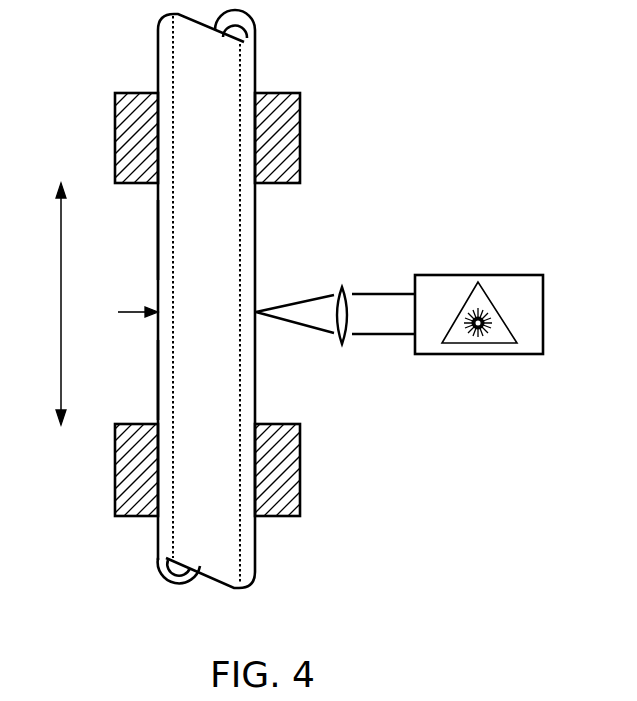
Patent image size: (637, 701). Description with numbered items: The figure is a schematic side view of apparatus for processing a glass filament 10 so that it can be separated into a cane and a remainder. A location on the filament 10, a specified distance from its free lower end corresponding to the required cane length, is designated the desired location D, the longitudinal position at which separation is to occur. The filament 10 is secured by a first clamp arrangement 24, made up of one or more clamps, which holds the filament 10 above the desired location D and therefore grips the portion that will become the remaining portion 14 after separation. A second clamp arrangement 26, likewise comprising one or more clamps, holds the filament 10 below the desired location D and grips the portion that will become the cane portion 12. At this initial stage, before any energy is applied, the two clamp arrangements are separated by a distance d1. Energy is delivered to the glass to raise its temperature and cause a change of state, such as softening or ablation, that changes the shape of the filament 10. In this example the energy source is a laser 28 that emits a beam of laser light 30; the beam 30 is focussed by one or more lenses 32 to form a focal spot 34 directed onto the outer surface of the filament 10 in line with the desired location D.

The filament 10 is at (158, 50).
The cane portion 12 is at (158, 365).
The remaining portion 14 is at (158, 237).
The first clamp arrangement 24 is at (115, 125).
The second clamp arrangement 26 is at (115, 490).
The laser 28 is at (450, 275).
The beam of laser light 30 is at (380, 294).
The lens 32 is at (343, 287).
The focal spot 34 is at (257, 312).
The desired location D is at (129, 314).
The distance d1 is at (48, 304).